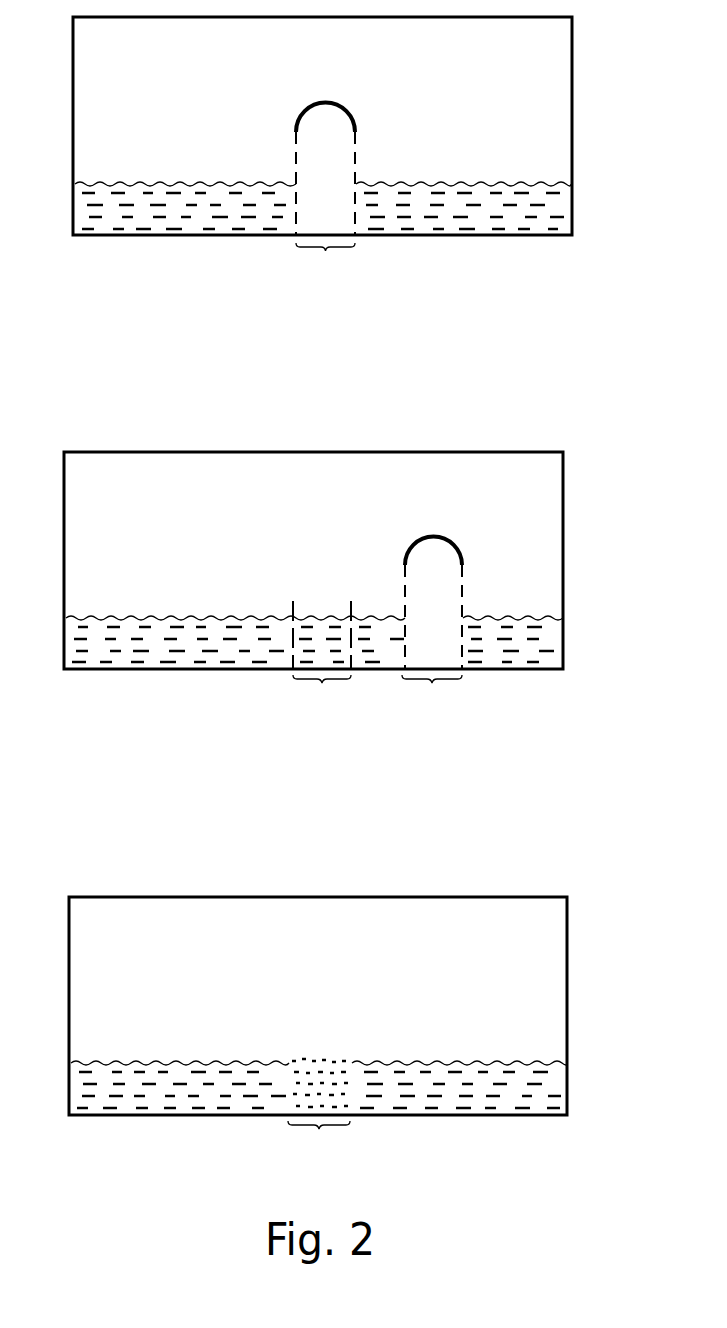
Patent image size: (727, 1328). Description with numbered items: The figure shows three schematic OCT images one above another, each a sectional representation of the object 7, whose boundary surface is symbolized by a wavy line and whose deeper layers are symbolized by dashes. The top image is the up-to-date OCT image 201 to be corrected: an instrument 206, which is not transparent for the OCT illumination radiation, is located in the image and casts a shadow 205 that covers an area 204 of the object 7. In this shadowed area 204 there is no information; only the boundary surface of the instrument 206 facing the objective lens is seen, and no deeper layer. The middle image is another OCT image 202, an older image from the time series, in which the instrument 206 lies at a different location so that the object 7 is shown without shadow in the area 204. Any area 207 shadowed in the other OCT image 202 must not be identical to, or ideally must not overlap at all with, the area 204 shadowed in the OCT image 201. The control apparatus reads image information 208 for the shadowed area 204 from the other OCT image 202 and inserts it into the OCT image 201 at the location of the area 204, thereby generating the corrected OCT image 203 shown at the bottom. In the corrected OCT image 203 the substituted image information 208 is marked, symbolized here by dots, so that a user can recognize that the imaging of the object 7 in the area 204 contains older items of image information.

The object 7 is at (108, 137).
The OCT image to be corrected 201 is at (554, 91).
The other OCT image 202 is at (545, 517).
The corrected OCT image 203 is at (545, 982).
The shadowed area 204 is at (326, 252).
The shadow 205 is at (358, 163).
The instrument 206 is at (340, 102).
The shadowed area in the other OCT image 207 is at (432, 684).
The image information 208 is at (322, 1052).